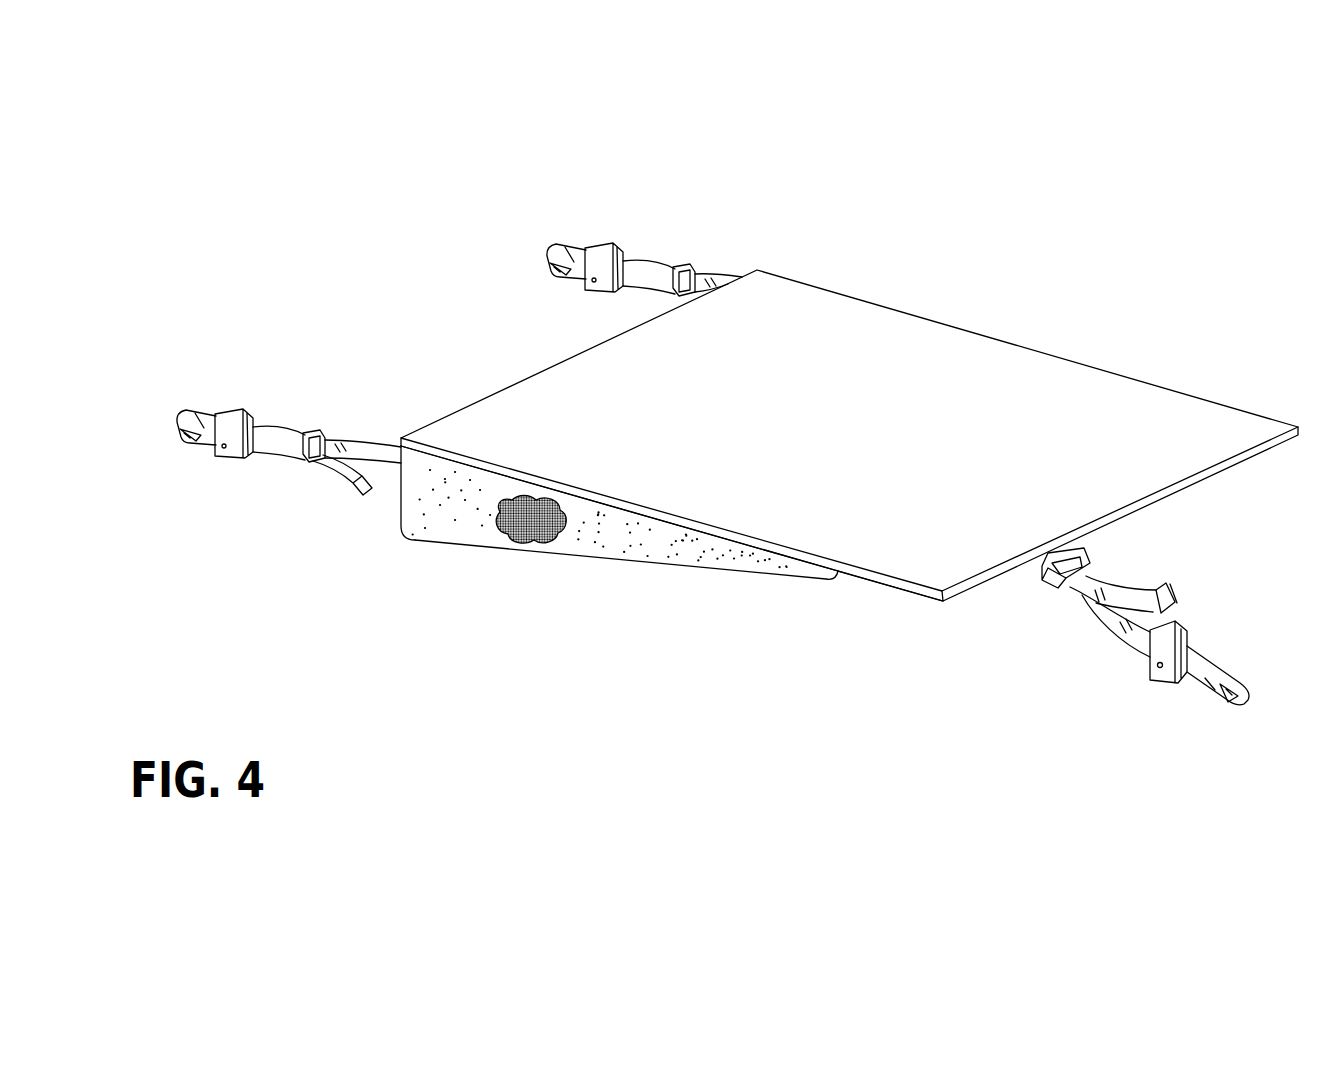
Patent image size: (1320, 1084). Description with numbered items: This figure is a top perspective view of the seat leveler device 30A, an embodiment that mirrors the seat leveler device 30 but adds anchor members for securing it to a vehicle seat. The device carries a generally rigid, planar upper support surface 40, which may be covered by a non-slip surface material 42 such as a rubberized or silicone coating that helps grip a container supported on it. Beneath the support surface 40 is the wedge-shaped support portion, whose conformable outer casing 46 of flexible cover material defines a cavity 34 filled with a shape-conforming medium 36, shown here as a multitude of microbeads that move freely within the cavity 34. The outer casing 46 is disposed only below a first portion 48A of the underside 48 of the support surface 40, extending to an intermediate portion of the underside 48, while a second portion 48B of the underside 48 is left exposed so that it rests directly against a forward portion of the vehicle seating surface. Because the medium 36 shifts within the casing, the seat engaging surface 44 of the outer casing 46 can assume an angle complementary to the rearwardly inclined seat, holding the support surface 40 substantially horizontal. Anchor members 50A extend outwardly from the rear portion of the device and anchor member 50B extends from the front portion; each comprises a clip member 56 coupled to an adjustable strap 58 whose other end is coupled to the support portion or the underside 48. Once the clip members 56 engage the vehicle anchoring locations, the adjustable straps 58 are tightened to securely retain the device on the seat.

The seat leveler device 30 is at (407, 549).
The seat leveler device 30A is at (965, 274).
The cavity 34 is at (564, 535).
The shape-conforming medium 36 is at (541, 543).
The upper support surface 40 is at (1126, 368).
The non-slip surface material 42 is at (1232, 432).
The seat engaging surface 44 is at (690, 572).
The conformable outer casing 46 is at (397, 500).
The underside 48 is at (903, 596).
The first portion 48A is at (752, 550).
The second portion 48B is at (852, 580).
The anchor members 50A is at (233, 406).
The anchor member 50B is at (1193, 630).
The clip members 56 is at (200, 421).
The adjustable straps 58 is at (338, 440).